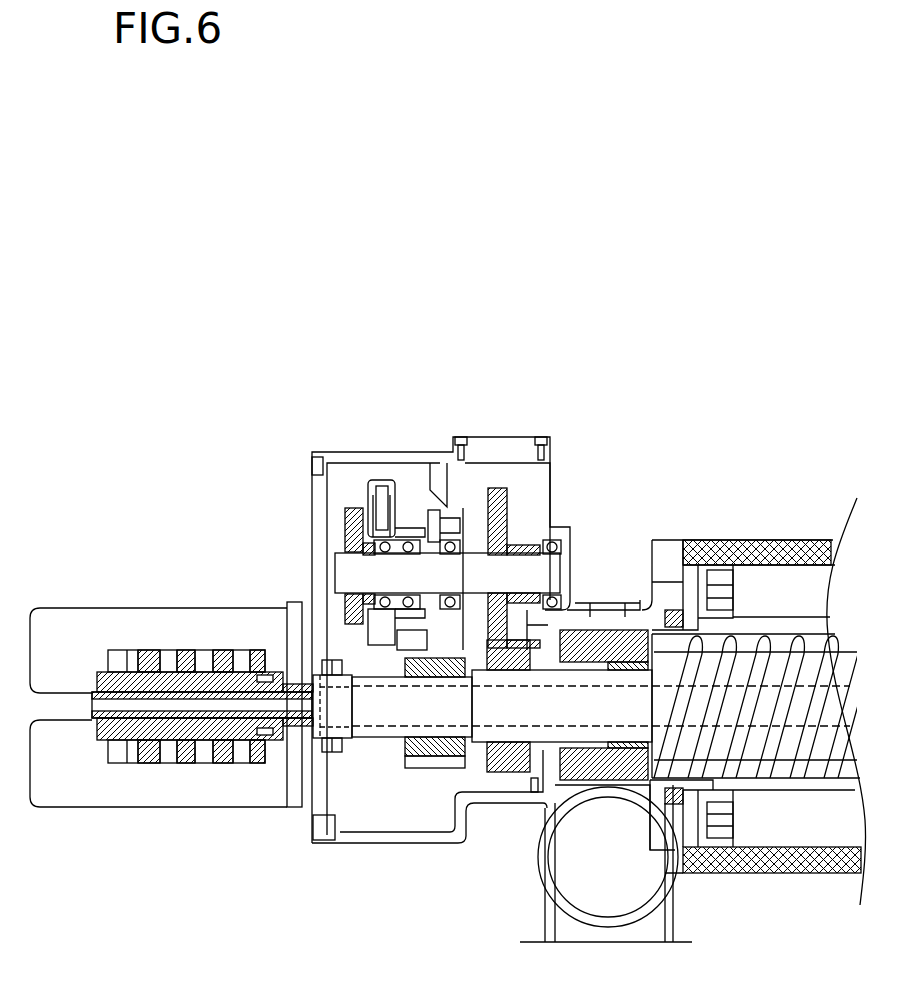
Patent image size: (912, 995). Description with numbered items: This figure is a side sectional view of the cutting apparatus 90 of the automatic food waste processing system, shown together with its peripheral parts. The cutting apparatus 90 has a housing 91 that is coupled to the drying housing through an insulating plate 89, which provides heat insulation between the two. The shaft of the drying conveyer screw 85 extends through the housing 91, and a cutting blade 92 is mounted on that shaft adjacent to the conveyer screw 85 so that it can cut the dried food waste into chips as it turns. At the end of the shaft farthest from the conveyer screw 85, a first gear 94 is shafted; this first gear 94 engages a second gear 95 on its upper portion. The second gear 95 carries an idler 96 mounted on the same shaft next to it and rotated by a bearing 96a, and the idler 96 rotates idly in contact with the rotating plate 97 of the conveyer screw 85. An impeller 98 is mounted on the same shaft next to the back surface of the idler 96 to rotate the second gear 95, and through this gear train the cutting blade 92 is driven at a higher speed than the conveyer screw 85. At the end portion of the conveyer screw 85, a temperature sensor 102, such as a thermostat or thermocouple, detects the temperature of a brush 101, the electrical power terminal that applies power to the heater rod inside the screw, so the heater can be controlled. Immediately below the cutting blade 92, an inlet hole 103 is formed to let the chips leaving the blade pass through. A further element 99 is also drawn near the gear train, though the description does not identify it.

The drying conveyer screw 85 is at (290, 806).
The insulating plate 89 is at (673, 616).
The cutting apparatus 90 is at (458, 422).
The housing 91 is at (415, 452).
The cutting blade 92 is at (603, 633).
The first gear 94 is at (338, 708).
The second gear 95 is at (345, 512).
The idler 96 is at (388, 526).
The bearing 96a is at (383, 485).
The rotating plate 97 is at (355, 770).
The impeller 98 is at (507, 500).
The fourth gear 99 is at (503, 770).
The brush 101 is at (245, 763).
The temperature sensor 102 is at (180, 763).
The inlet hole 103 is at (670, 880).